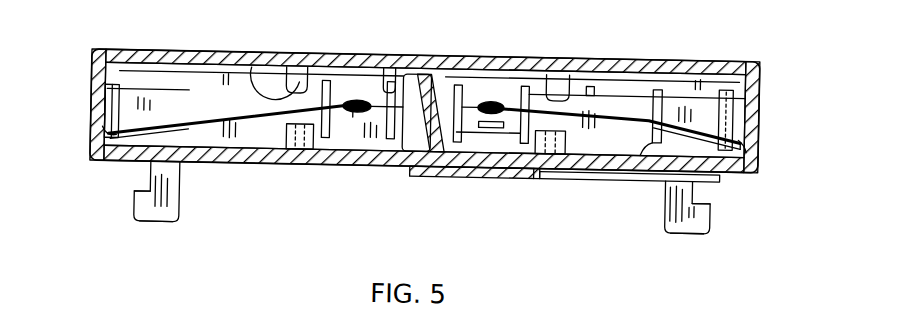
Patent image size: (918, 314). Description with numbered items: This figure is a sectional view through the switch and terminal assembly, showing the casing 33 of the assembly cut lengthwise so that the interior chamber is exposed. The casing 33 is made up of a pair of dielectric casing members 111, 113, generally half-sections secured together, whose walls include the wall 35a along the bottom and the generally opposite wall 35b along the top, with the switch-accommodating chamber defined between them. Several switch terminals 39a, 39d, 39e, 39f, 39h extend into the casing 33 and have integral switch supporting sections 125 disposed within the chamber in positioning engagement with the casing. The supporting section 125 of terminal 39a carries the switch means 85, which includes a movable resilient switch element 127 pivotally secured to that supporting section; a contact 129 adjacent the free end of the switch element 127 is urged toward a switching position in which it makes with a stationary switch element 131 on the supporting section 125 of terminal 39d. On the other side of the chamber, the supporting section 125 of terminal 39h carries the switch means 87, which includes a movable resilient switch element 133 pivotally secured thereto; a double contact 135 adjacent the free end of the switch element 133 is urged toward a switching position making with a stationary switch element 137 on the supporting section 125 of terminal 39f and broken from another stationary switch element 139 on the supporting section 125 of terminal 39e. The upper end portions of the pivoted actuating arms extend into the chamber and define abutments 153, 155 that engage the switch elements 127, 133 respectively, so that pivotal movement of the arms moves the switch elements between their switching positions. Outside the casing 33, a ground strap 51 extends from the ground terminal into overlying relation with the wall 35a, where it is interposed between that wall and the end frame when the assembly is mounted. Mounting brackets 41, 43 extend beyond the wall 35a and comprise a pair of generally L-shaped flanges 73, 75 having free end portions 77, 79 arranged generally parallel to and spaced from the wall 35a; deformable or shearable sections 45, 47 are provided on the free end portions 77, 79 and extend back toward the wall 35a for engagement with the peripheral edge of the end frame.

The casing 33 is at (717, 43).
The wall 35a is at (235, 160).
The wall 35b is at (207, 48).
The switch terminal 39a is at (165, 49).
The switch terminal 39d is at (425, 56).
The switch terminal 39e is at (449, 168).
The switch terminal 39f is at (542, 171).
The switch terminal 39h is at (642, 140).
The mounting bracket 41 is at (178, 216).
The mounting bracket 43 is at (683, 222).
The deformable section 45 is at (143, 189).
The deformable section 47 is at (706, 193).
The ground strap 51 is at (587, 168).
The L-shaped flange 73 is at (162, 172).
The L-shaped flange 75 is at (676, 186).
The free end portion 77 is at (163, 222).
The free end portion 79 is at (700, 223).
The switch means 85 is at (318, 56).
The switch means 87 is at (611, 100).
The casing member 111 is at (384, 62).
The casing member 113 is at (317, 156).
The switch supporting section 125 is at (357, 93).
The movable resilient switch element 127 is at (103, 100).
The contact 129 is at (354, 112).
The stationary switch element 131 is at (372, 80).
The movable resilient switch element 133 is at (728, 113).
The double contact 135 is at (535, 62).
The stationary switch element 137 is at (473, 63).
The stationary switch element 139 is at (497, 164).
The abutment 153 is at (262, 63).
The abutment 155 is at (596, 75).